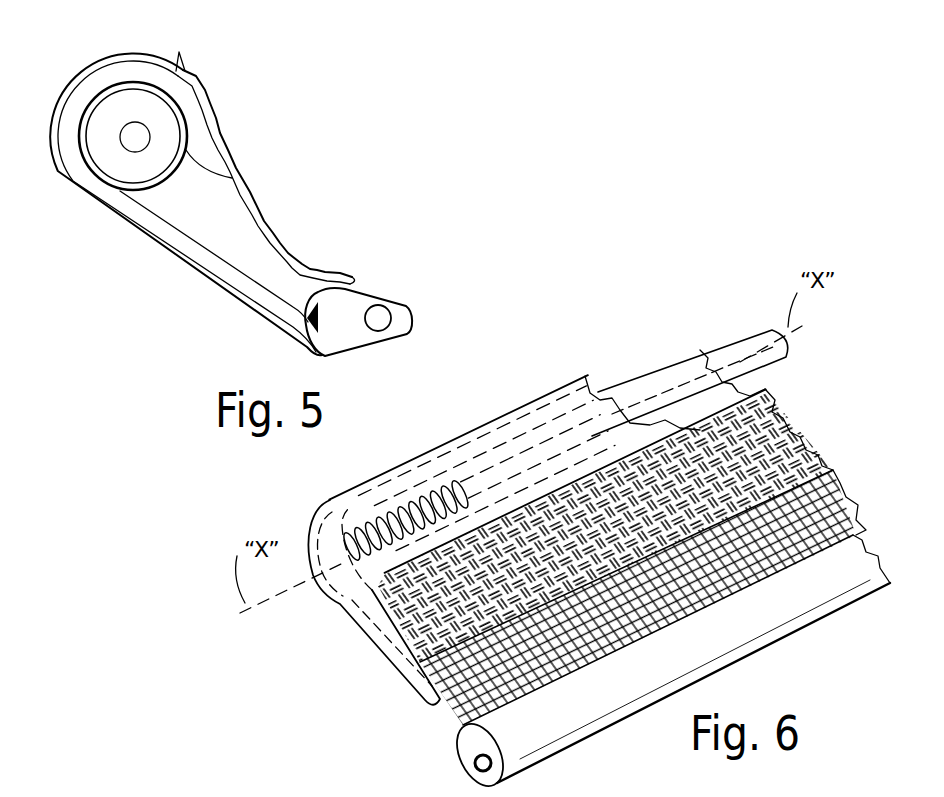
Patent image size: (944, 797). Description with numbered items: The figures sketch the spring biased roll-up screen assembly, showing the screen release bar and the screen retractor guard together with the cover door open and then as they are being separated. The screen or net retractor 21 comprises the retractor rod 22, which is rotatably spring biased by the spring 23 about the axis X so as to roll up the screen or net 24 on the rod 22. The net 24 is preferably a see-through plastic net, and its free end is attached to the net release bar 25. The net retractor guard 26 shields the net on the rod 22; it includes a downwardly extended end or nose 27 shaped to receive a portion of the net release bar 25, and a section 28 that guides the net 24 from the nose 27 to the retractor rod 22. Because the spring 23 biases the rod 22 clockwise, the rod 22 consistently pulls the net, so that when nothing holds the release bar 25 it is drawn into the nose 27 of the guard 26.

In FIG. 5, the screen or net retractor 21 is at (142, 122).
In FIG. 6, the screen or net retractor 21 is at (662, 383).
In FIG. 5, the retractor rod 22 is at (184, 99).
In FIG. 6, the retractor rod 22 is at (546, 416).
In FIG. 6, the spring 23 is at (433, 503).
In FIG. 5, the screen or net 24 is at (170, 225).
In FIG. 6, the screen or net 24 is at (456, 682).
In FIG. 5, the net release bar 25 is at (360, 297).
In FIG. 6, the net release bar 25 is at (805, 608).
In FIG. 5, the net retractor guard 26 is at (241, 160).
In FIG. 5, the downwardly extended end (nose) 27 is at (301, 258).
In FIG. 5, the guide section 28 is at (218, 274).